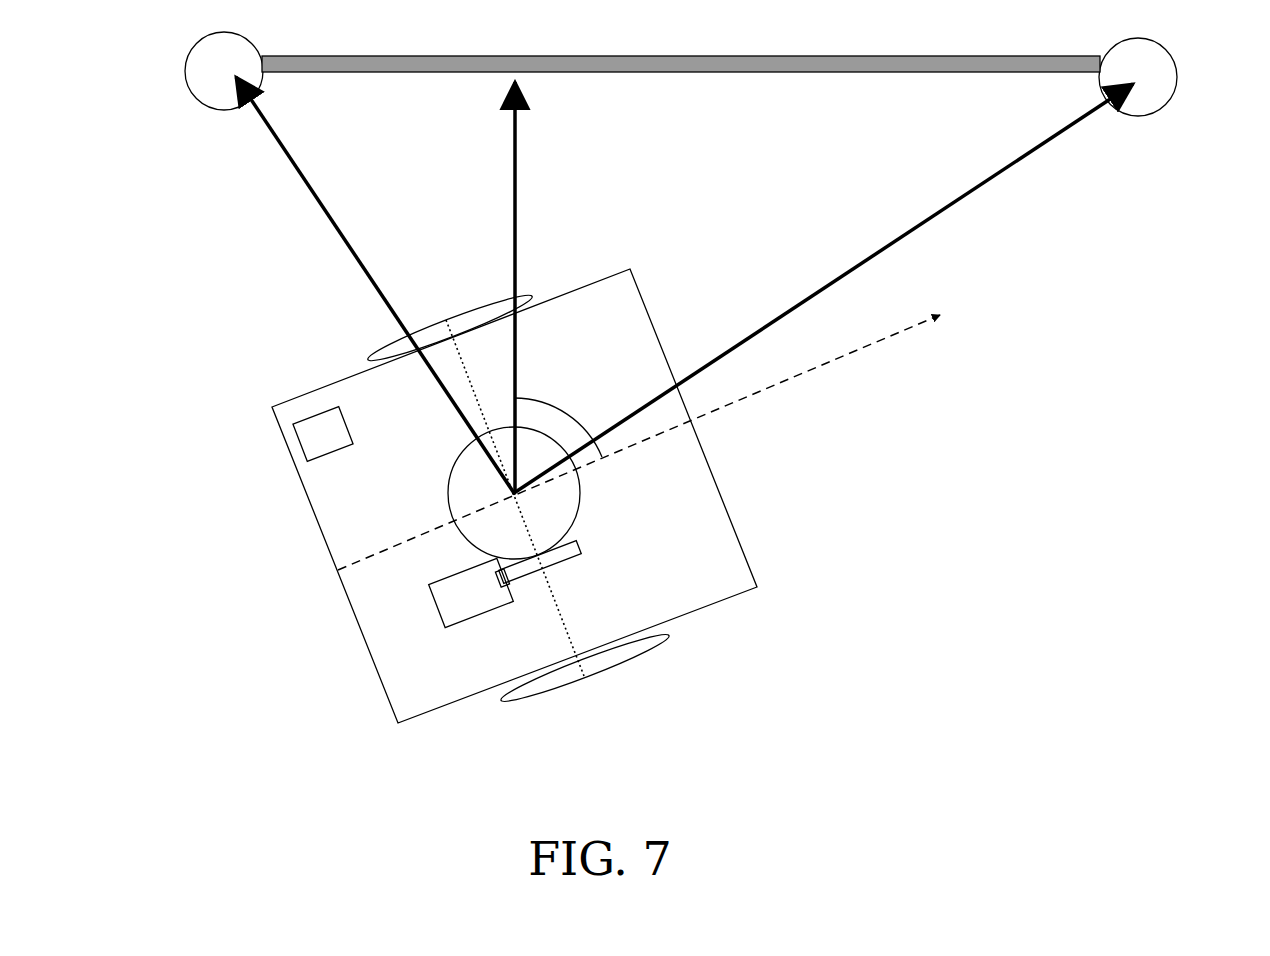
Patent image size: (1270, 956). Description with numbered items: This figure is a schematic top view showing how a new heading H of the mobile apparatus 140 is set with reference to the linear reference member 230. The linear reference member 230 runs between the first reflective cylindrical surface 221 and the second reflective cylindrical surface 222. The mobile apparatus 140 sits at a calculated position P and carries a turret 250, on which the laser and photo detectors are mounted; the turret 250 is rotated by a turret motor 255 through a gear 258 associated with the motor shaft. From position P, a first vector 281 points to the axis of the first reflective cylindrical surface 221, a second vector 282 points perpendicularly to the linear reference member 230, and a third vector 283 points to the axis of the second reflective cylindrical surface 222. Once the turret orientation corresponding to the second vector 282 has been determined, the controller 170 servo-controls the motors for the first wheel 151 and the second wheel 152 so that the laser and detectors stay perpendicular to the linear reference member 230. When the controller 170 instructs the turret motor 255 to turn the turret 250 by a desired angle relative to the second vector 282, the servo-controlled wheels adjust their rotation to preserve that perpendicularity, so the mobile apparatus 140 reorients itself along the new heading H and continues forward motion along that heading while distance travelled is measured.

The first reflective cylindrical surface 221 is at (206, 110).
The second reflective cylindrical surface 222 is at (1132, 116).
The linear reference member 230 is at (650, 74).
The mobile apparatus 140 is at (368, 648).
The controller 170 is at (294, 433).
The second wheel 152 is at (385, 355).
The first wheel 151 is at (607, 676).
The turret 250 is at (460, 455).
The gear 258 is at (557, 560).
The turret motor 255 is at (477, 617).
The first vector 281 is at (316, 196).
The second vector 282 is at (517, 152).
The third vector 283 is at (1008, 169).
The heading H is at (862, 351).
The position P is at (514, 493).